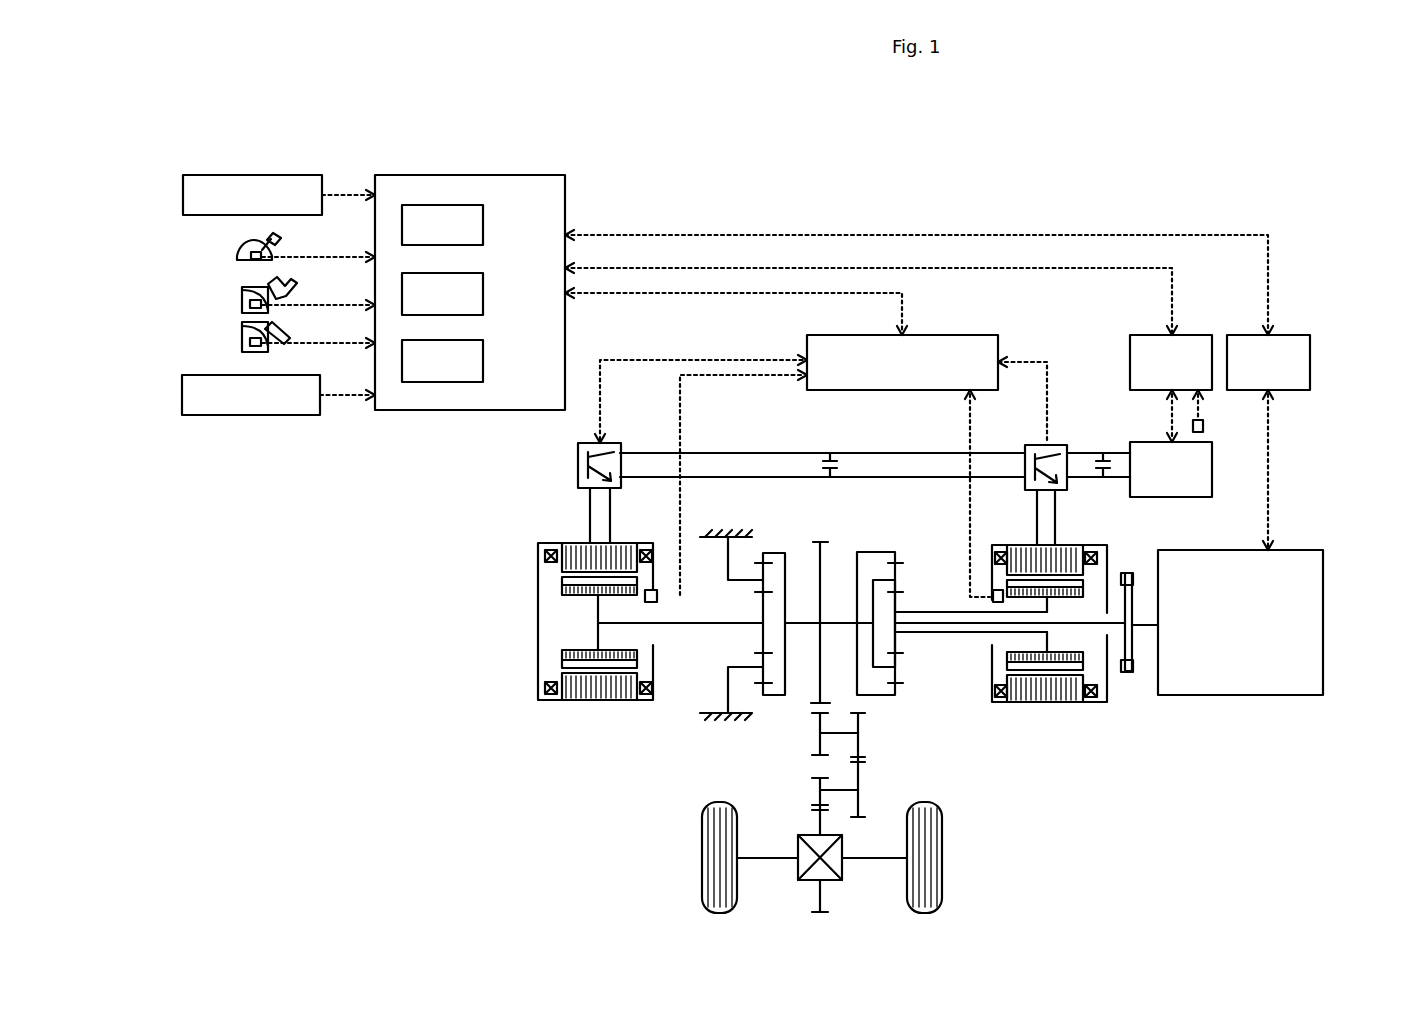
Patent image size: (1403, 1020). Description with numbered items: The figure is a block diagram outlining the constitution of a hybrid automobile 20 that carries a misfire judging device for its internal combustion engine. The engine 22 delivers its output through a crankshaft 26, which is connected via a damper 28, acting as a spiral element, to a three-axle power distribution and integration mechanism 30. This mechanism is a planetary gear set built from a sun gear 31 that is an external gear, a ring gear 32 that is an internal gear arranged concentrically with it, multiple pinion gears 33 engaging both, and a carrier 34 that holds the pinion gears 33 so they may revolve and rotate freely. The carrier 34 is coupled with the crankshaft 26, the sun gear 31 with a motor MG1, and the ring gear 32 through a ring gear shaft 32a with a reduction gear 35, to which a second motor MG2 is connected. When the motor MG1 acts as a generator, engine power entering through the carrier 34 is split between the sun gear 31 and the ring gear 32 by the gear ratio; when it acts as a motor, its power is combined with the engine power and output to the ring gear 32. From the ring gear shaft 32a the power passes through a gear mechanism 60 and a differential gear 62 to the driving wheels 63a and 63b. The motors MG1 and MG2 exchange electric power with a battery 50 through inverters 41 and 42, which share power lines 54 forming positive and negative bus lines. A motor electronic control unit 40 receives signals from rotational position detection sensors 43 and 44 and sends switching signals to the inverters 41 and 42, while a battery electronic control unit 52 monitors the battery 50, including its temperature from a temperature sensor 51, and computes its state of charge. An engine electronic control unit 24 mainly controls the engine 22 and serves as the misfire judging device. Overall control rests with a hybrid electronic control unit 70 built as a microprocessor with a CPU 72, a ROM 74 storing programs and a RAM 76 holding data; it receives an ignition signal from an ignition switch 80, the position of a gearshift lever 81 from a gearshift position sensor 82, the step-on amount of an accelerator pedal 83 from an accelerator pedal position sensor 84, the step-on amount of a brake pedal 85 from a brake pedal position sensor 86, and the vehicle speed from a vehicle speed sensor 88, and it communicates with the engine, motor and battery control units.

The hybrid automobile 20 is at (1090, 205).
The engine 22 is at (1323, 612).
The engine electronic control unit 24 is at (1288, 335).
The crankshaft 26 is at (1143, 632).
The damper 28 is at (1134, 676).
The power distribution and integration mechanism 30 is at (912, 537).
The sun gear 31 is at (897, 640).
The ring gear 32 is at (897, 688).
The ring gear shaft 32a is at (805, 623).
The pinion gears 33 is at (897, 665).
The carrier 34 is at (869, 590).
The reduction gear 35 is at (777, 530).
The motor electronic control unit 40 is at (940, 335).
The inverter 41 is at (1062, 445).
The inverter 42 is at (612, 443).
The rotational position detection sensor 43 is at (993, 590).
The rotational position detection sensor 44 is at (652, 588).
The battery 50 is at (1172, 497).
The temperature sensor 51 is at (1203, 426).
The battery electronic control unit 52 is at (1147, 335).
The power lines 54 is at (884, 477).
The gear mechanism 60 is at (907, 779).
The differential gear 62 is at (845, 872).
The driving wheel 63a is at (700, 892).
The driving wheel 63b is at (944, 893).
The hybrid electronic control unit 70 is at (470, 175).
The CPU 72 is at (483, 224).
The ROM 74 is at (483, 292).
The RAM 76 is at (483, 361).
The ignition switch 80 is at (183, 192).
The gearshift lever 81 is at (268, 238).
The gearshift position sensor 82 is at (238, 254).
The accelerator pedal 83 is at (270, 294).
The accelerator pedal position sensor 84 is at (242, 305).
The brake pedal 85 is at (268, 336).
The brake pedal position sensor 86 is at (242, 343).
The vehicle speed sensor 88 is at (182, 390).
The motor MG1 is at (1080, 703).
The motor MG2 is at (576, 543).